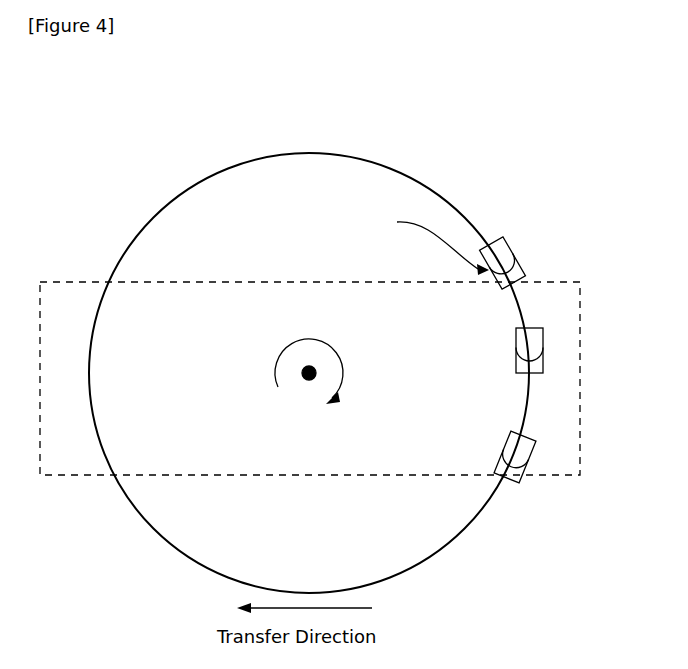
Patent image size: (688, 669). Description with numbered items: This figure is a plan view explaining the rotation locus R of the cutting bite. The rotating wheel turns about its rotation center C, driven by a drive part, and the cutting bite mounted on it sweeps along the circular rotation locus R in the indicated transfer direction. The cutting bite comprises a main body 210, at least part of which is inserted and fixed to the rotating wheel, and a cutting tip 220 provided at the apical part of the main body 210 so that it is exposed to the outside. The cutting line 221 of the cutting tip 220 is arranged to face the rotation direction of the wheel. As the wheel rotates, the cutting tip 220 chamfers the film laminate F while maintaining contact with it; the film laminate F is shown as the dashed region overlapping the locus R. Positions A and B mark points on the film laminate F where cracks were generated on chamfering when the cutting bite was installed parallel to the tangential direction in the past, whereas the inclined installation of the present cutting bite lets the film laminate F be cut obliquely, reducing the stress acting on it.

The rotation locus R is at (413, 175).
The main body 210 is at (530, 226).
The cutting tip 220 is at (420, 243).
The cutting line 221 is at (513, 272).
The point A is at (492, 263).
The point B is at (514, 350).
The rotation center C is at (309, 380).
The film laminate F is at (582, 378).